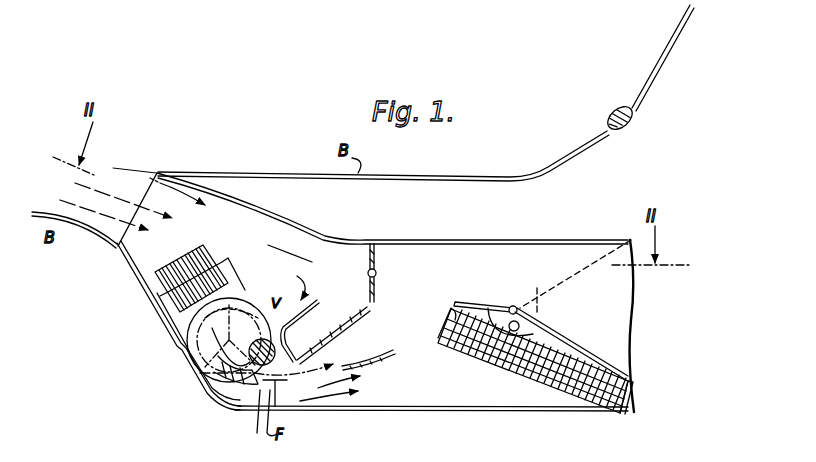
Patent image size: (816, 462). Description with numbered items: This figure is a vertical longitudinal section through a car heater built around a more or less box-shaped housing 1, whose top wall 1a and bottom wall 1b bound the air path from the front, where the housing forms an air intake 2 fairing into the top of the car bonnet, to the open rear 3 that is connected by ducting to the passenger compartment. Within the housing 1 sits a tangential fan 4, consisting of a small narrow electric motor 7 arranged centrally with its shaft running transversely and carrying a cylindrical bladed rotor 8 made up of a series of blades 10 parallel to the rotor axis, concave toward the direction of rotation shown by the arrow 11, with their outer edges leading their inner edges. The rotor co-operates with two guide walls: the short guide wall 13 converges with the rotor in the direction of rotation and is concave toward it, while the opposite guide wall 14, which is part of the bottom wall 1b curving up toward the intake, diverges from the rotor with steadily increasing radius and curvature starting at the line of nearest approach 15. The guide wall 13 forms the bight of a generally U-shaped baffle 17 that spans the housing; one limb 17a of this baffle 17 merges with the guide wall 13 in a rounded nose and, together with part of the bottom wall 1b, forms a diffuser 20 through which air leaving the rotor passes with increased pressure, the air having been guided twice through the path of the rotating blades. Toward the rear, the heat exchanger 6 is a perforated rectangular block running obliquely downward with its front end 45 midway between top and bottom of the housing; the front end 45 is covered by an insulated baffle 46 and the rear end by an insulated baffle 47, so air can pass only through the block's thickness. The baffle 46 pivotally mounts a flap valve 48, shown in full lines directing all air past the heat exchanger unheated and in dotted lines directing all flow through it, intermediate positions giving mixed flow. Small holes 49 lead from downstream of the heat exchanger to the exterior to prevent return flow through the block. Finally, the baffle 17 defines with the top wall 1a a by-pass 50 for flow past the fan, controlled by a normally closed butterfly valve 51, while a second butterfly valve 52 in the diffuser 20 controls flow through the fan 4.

The housing 1 is at (425, 226).
The top wall 1a is at (442, 239).
The bottom wall 1b is at (383, 412).
The air intake 2 is at (132, 208).
The open rear 3 is at (617, 316).
The tangential fan 4 is at (172, 334).
The heat exchanger 6 is at (527, 390).
The electric motor 7 is at (167, 310).
The bladed rotor 8 is at (197, 352).
The blades 10 is at (228, 378).
The arrow 11 is at (226, 364).
The guide wall 13 is at (300, 326).
The guide wall 14 is at (266, 402).
The line of nearest approach 15 is at (200, 364).
The baffle 17 is at (293, 280).
The limb 17a is at (366, 319).
The diffuser 20 is at (392, 396).
The front end 45 is at (466, 304).
The insulated baffle 46 is at (447, 318).
The insulated baffle 47 is at (635, 404).
The flap valve 48 is at (593, 350).
The small holes 49 is at (522, 326).
The by-pass 50 is at (350, 282).
The butterfly valve 51 is at (376, 260).
The butterfly valve 52 is at (398, 353).